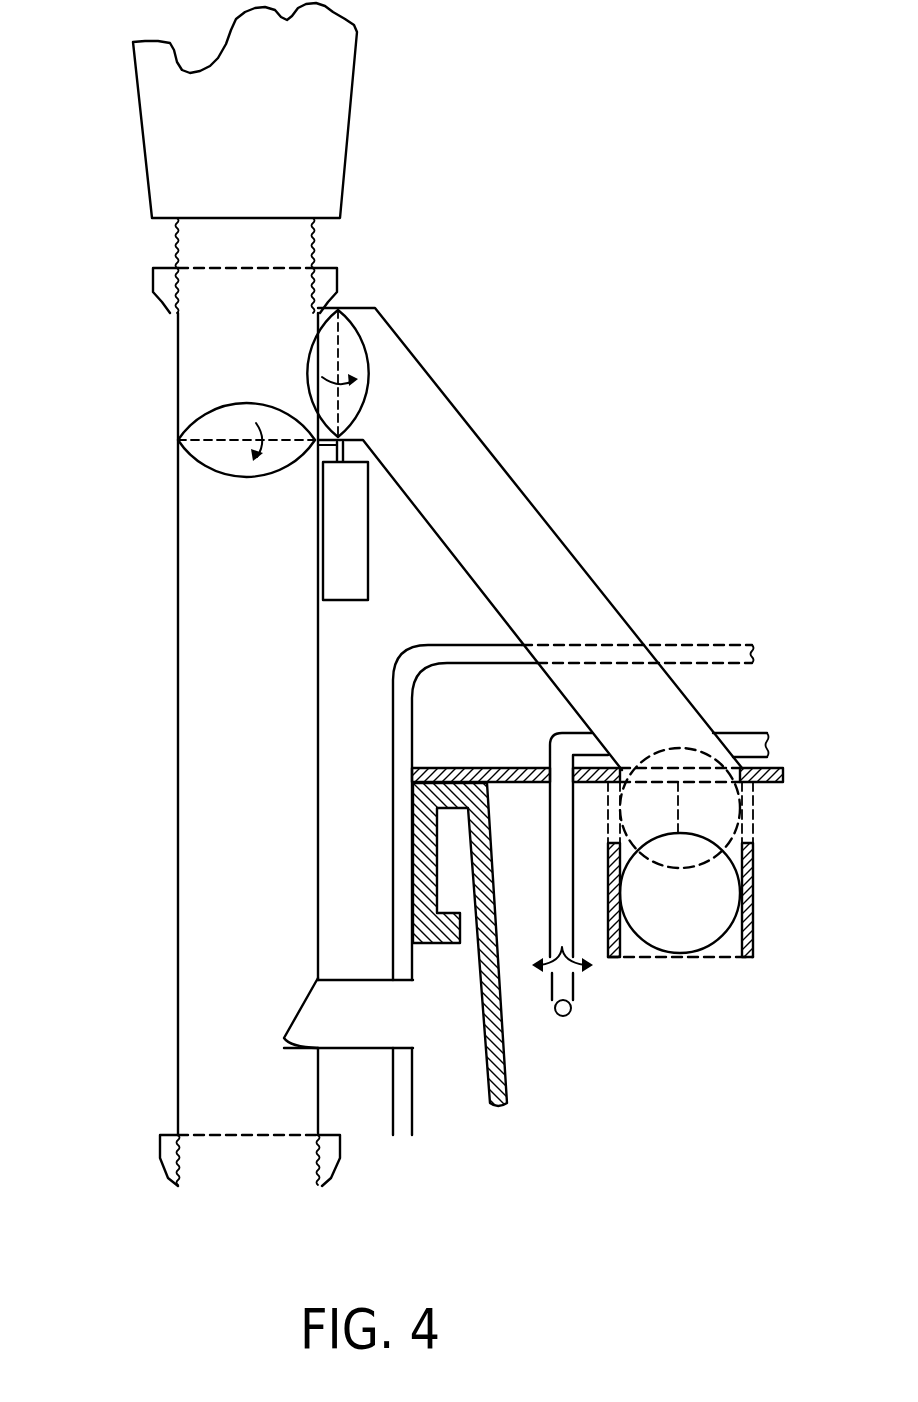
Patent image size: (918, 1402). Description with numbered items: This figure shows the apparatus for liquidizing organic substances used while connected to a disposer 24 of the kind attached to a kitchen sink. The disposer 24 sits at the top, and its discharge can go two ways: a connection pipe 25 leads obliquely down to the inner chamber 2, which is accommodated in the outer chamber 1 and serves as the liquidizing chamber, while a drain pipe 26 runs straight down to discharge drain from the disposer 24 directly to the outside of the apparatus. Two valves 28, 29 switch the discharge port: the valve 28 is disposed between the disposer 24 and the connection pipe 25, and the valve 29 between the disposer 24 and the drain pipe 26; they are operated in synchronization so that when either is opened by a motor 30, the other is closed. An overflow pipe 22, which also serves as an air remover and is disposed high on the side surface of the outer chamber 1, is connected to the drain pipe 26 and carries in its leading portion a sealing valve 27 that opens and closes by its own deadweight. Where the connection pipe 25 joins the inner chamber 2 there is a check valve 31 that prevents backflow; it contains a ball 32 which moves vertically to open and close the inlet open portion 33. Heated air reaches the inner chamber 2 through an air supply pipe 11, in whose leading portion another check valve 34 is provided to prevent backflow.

The outer chamber 1 is at (403, 737).
The inner chamber 2 is at (478, 980).
The air supply pipe 11 is at (555, 745).
The overflow pipe 22 is at (357, 1005).
The disposer 24 is at (345, 135).
The connection pipe 25 is at (502, 497).
The drain pipe 26 is at (210, 777).
The sealing valve 27 is at (297, 1012).
The valve 28 is at (355, 355).
The valve 29 is at (218, 462).
The motor 30 is at (350, 552).
The check valve 31 is at (755, 922).
The ball 32 is at (722, 885).
The inlet open portion 33 is at (755, 800).
The check valve 34 is at (548, 990).